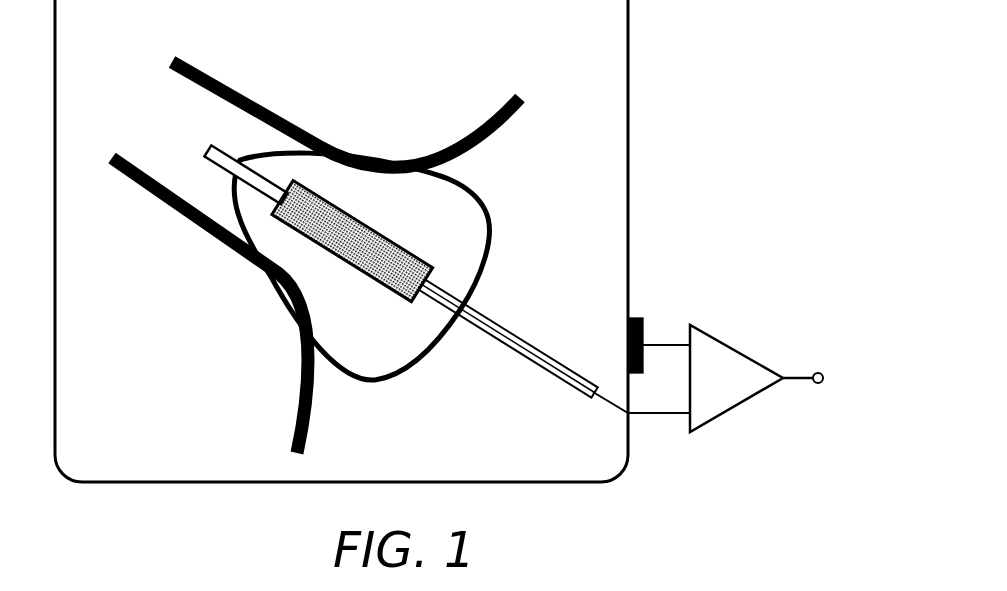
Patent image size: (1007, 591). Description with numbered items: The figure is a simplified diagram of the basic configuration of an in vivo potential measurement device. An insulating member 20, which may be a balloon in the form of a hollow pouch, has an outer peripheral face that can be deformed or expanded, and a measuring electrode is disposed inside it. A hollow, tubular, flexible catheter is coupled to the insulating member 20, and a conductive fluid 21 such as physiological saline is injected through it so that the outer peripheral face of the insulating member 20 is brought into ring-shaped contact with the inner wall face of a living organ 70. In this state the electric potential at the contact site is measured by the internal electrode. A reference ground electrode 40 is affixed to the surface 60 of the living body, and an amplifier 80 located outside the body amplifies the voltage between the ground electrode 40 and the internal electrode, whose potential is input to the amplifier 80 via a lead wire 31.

The insulating member 20 is at (477, 188).
The conductive fluid 21 is at (455, 243).
The lead wire 31 is at (662, 415).
The reference ground electrode 40 is at (648, 323).
The surface of a living body 60 is at (628, 72).
The living organ 70 is at (270, 117).
The amplifier 80 is at (743, 348).